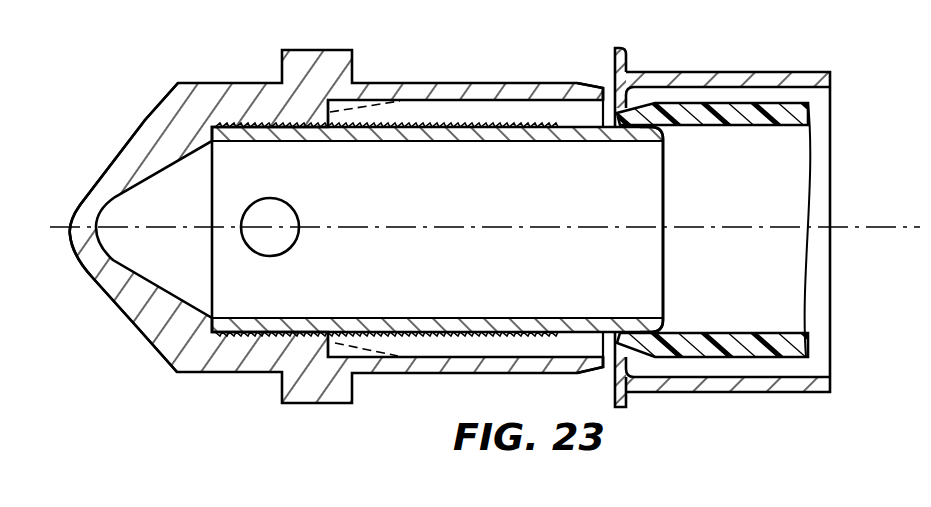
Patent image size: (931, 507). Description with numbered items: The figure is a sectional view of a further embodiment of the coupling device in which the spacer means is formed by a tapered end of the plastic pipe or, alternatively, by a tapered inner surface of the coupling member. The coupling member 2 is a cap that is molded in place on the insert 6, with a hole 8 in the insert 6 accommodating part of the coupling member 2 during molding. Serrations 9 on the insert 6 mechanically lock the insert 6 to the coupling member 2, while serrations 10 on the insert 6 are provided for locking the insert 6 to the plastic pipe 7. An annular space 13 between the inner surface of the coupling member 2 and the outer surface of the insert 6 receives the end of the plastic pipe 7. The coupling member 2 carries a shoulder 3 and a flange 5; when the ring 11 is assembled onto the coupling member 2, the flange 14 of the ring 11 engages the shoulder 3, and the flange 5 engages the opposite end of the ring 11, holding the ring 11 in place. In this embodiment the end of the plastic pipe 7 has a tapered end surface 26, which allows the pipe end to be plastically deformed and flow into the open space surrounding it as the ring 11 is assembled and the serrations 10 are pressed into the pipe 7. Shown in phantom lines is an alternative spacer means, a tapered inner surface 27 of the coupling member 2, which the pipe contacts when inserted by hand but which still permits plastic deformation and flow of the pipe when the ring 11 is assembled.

The coupling member 2 is at (132, 322).
The shoulder 3 is at (290, 71).
The flange 5 is at (593, 92).
The insert 6 is at (667, 250).
The plastic pipe 7 is at (705, 127).
The hole 8 is at (258, 208).
The serrations 9 is at (262, 322).
The serrations 10 is at (395, 134).
The ring 11 is at (712, 72).
The annular space 13 is at (423, 108).
The flange 14 is at (630, 53).
The tapered end surface 26 is at (634, 141).
The tapered inner surface 27 is at (344, 129).